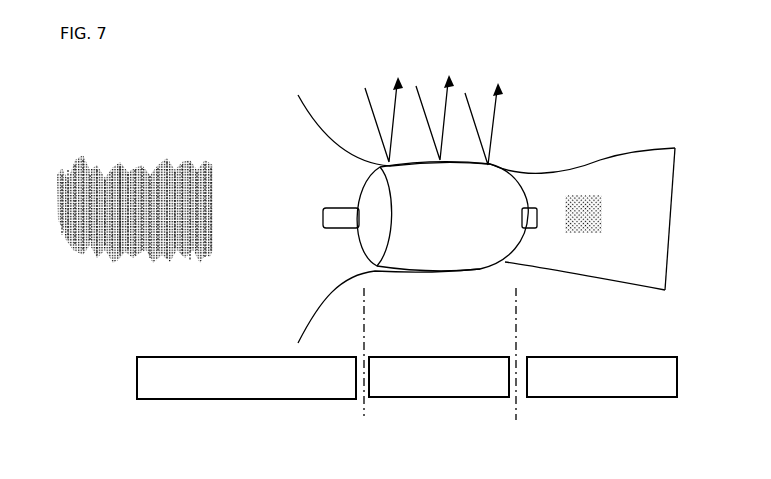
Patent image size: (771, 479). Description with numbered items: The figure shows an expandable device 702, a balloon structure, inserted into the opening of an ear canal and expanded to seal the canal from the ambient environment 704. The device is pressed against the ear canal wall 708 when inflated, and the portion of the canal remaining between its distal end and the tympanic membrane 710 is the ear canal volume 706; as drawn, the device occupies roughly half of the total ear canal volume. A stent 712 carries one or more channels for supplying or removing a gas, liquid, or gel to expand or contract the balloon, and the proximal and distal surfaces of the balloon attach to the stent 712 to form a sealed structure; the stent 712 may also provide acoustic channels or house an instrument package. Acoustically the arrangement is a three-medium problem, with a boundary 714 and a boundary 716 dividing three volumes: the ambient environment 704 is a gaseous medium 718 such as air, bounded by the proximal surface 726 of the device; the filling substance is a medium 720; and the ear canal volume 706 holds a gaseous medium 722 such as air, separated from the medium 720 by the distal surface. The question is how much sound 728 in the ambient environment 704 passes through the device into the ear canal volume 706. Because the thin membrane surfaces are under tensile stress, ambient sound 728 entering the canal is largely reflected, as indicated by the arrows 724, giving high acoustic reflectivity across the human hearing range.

The expandable device 702 is at (497, 190).
The ambient environment 704 is at (35, 210).
The ear canal volume 706 is at (648, 225).
The ear canal wall 708 is at (622, 155).
The tympanic membrane 710 is at (673, 245).
The stent 712 is at (345, 215).
The boundary 714 is at (362, 372).
The boundary 716 is at (513, 373).
The gaseous medium 718 is at (312, 385).
The medium 720 is at (490, 385).
The gaseous medium 722 is at (655, 385).
The arrows 724 is at (432, 111).
The proximal surface 726 is at (302, 255).
The sound 728 is at (143, 158).